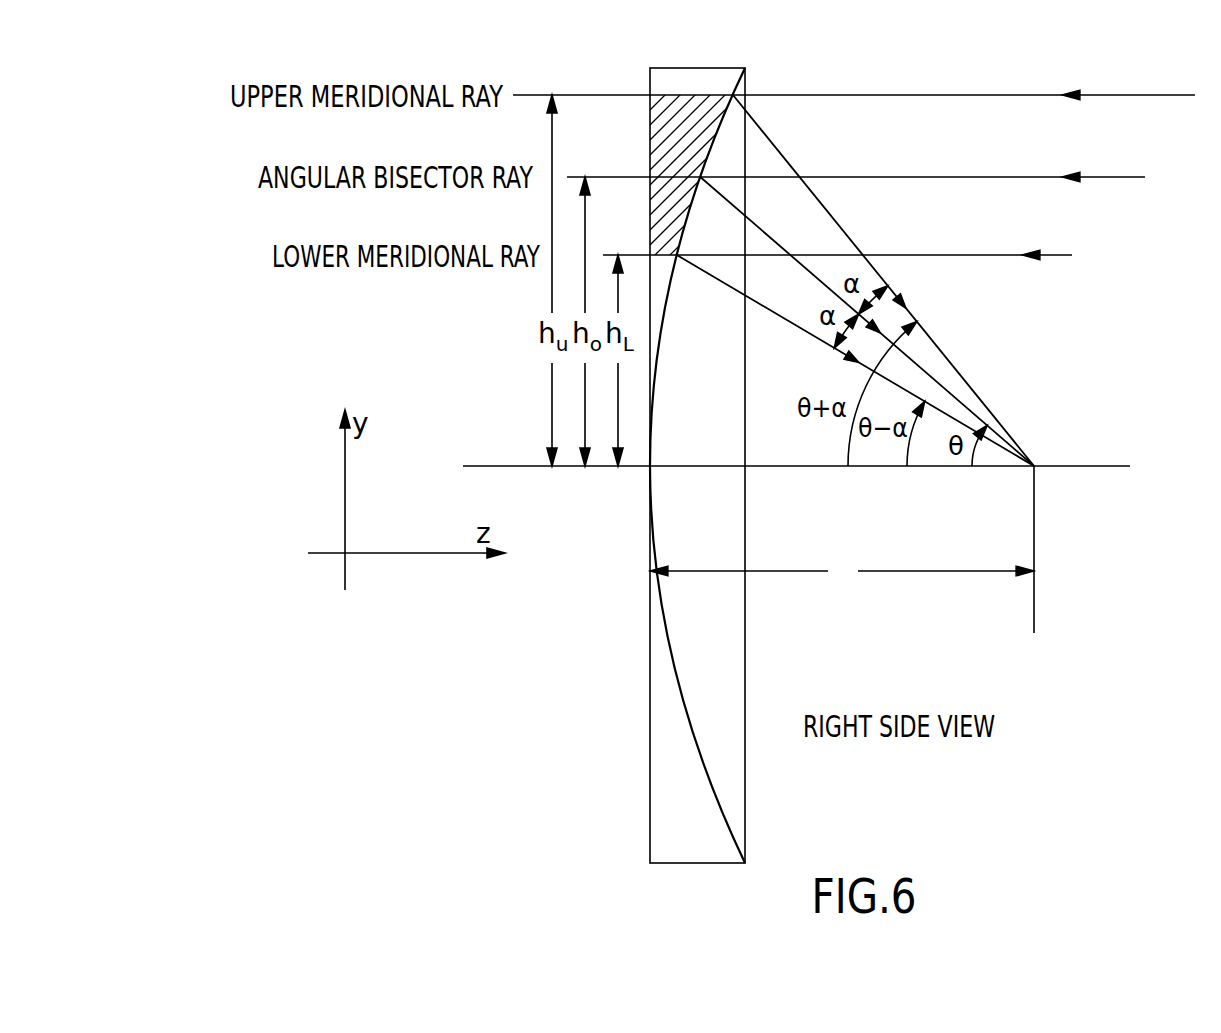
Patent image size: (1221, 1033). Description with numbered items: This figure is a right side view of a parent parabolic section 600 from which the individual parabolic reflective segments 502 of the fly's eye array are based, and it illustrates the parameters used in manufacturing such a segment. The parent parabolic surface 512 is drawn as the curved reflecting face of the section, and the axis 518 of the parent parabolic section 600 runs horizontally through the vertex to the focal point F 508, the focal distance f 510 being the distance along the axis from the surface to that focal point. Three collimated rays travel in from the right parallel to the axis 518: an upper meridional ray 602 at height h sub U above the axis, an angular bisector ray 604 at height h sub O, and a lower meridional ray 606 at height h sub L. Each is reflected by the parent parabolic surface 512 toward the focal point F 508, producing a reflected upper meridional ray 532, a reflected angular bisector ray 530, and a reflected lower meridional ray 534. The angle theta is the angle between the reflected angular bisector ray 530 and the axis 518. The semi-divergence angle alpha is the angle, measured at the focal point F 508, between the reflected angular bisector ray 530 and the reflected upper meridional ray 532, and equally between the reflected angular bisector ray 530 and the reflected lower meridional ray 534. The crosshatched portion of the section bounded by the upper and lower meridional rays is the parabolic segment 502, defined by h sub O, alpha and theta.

The parent parabolic section 600 is at (732, 68).
The upper meridional ray 602 is at (1010, 93).
The angular bisector ray 604 is at (1011, 175).
The lower meridional ray 606 is at (1002, 252).
The parabolic reflective segment 502 is at (648, 130).
The reflected upper meridional ray 532 is at (772, 140).
The reflected angular bisector ray 530 is at (912, 358).
The reflected lower meridional ray 534 is at (773, 314).
The parent parabolic surface 512 is at (653, 385).
The focal point F 508 is at (1068, 528).
The axis 518 is at (830, 470).
The focal distance f 510 is at (910, 573).